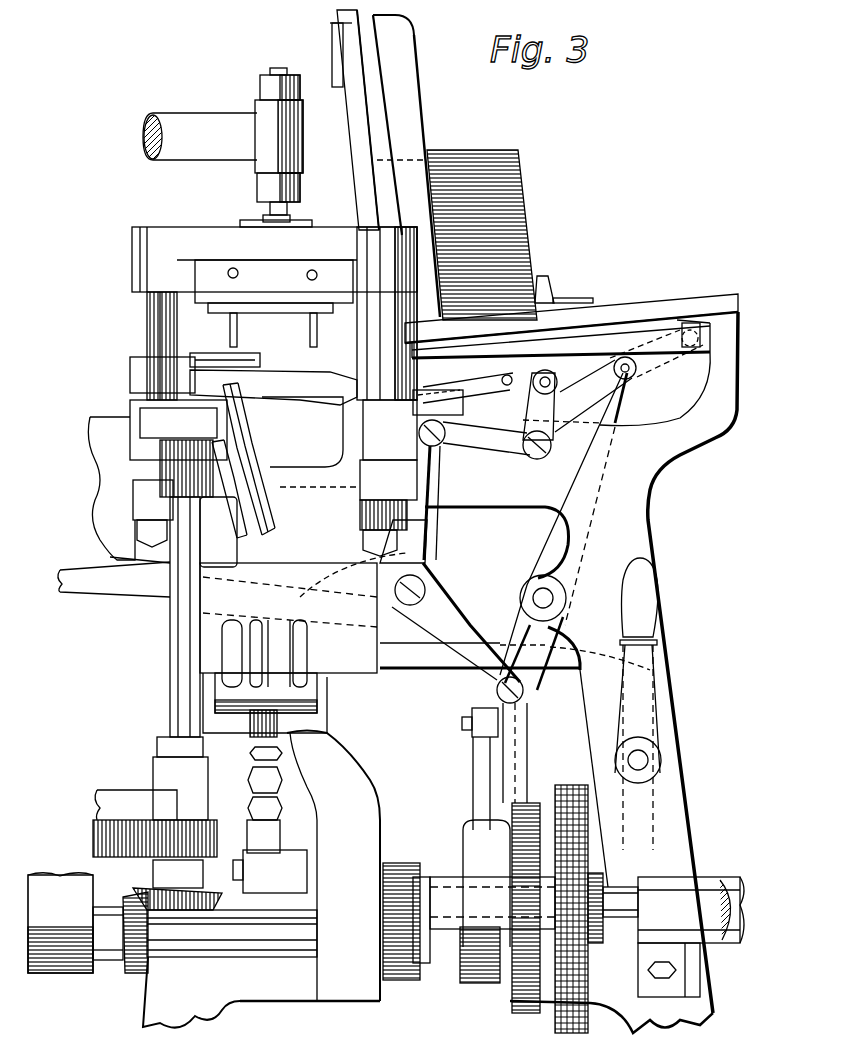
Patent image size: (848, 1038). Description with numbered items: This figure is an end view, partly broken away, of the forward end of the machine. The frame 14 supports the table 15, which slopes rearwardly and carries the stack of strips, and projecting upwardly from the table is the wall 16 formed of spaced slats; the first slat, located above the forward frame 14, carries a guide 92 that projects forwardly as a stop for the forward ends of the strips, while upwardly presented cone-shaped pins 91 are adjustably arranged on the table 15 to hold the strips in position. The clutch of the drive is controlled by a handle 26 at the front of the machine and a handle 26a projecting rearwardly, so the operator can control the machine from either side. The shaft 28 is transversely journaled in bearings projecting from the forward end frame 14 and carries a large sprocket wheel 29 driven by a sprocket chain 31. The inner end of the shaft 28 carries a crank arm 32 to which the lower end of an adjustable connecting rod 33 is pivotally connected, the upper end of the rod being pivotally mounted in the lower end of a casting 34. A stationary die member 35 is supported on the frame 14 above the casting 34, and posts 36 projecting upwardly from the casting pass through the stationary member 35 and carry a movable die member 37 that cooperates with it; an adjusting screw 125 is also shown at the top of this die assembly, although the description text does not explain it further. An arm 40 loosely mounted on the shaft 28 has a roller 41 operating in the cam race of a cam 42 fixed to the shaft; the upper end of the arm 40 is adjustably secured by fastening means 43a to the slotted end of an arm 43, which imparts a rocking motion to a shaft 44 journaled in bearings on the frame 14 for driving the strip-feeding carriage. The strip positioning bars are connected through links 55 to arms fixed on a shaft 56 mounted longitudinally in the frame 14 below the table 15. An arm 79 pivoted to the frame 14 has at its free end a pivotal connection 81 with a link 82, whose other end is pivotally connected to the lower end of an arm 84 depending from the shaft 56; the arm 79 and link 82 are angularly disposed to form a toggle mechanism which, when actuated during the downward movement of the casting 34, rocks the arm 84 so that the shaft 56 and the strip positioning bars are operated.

The frame 14 is at (650, 510).
The table 15 is at (692, 300).
The wall 16 is at (350, 22).
The handle 26 is at (648, 578).
The handle 26a is at (115, 593).
The shaft 28 is at (440, 890).
The large sprocket wheel 29 is at (608, 887).
The sprocket chain 31 is at (570, 785).
The crank arm 32 is at (300, 857).
The adjustable connecting rod 33 is at (250, 803).
The casting 34 is at (303, 610).
The stationary die member 35 is at (273, 445).
The posts 36 is at (147, 318).
The movable die member 37 is at (274, 303).
The arm 40 is at (473, 760).
The roller 41 is at (503, 862).
The cam 42 is at (522, 1010).
The arm 43 is at (520, 748).
The fastening means 43a is at (460, 722).
The shaft 44 is at (425, 668).
The links 55 is at (636, 376).
The shaft 56 is at (533, 597).
The arm 79 is at (420, 548).
The pivotal connection 81 is at (428, 574).
The link 82 is at (488, 685).
The arm 84 is at (515, 630).
The cone-shaped pins 91 is at (548, 290).
The guide 92 is at (418, 104).
The adjusting screw 125 is at (282, 208).